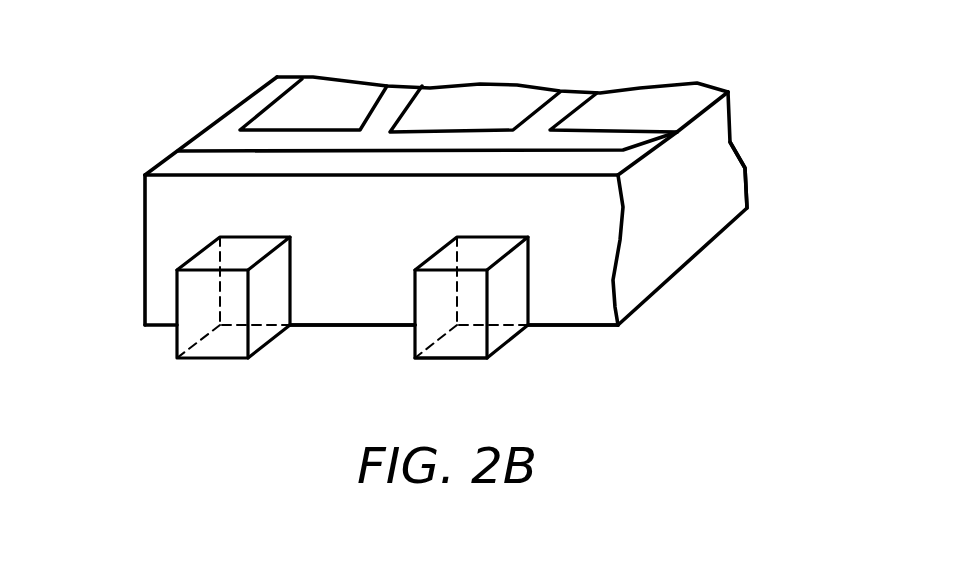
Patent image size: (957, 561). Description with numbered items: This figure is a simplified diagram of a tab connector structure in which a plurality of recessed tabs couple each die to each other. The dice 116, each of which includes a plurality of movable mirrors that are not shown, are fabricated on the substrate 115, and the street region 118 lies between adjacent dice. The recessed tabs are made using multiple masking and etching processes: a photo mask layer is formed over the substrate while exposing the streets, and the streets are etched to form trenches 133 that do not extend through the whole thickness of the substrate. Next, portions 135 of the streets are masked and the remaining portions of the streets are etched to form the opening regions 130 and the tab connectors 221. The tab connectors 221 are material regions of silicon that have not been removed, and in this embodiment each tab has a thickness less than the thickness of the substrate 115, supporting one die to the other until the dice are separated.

The street region 118 is at (135, 228).
The dice 116 is at (660, 107).
The substrate 115 is at (703, 222).
The opening regions 130 is at (569, 303).
The trenches 133 is at (358, 297).
The portions of the streets 135 is at (473, 253).
The tab connectors 221 is at (470, 358).